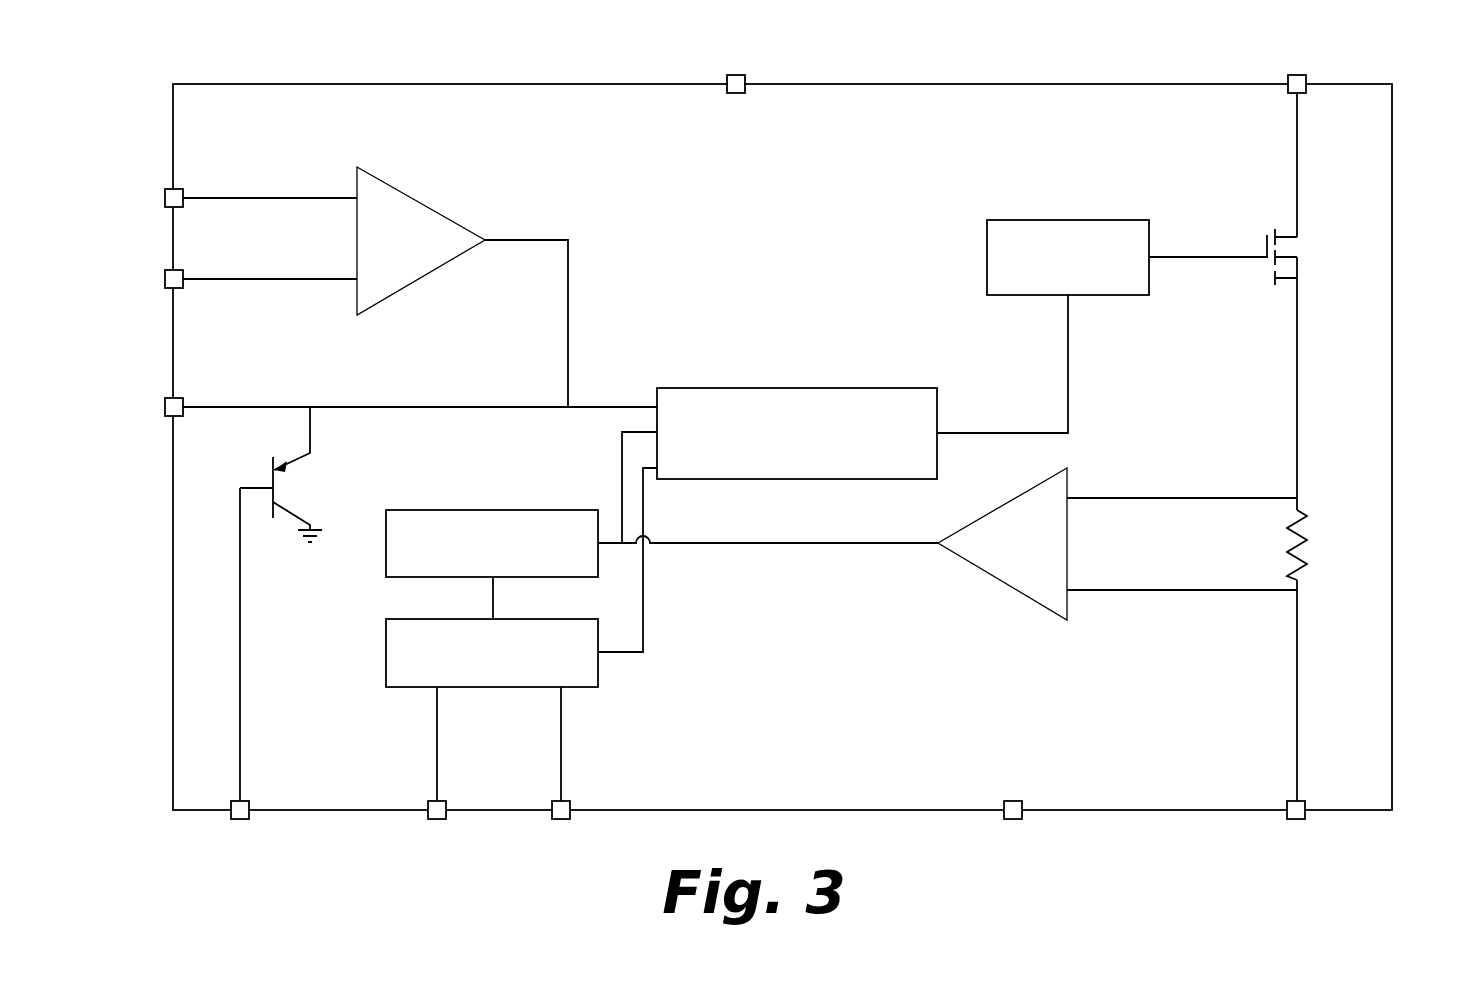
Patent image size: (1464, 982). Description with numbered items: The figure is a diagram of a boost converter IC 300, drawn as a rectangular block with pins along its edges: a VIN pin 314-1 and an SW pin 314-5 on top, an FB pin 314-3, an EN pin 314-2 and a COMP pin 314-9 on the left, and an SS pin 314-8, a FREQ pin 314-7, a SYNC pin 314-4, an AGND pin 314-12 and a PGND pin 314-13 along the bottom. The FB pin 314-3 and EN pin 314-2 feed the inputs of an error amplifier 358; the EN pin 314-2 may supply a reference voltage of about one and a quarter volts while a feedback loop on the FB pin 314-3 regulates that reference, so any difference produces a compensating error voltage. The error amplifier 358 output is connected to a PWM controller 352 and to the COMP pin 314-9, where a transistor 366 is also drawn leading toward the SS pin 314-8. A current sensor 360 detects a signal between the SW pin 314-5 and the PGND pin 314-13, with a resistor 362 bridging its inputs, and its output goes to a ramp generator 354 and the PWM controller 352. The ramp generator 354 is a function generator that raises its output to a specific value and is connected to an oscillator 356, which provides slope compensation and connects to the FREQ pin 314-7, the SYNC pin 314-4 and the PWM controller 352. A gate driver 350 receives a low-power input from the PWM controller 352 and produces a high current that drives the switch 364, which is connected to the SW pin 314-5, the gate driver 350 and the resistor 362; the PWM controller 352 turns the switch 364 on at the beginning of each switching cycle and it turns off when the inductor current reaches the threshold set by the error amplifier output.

The boost converter IC 300 is at (220, 50).
The VIN pin 314-1 is at (707, 69).
The EN pin 314-2 is at (85, 300).
The FB pin 314-3 is at (85, 223).
The SYNC pin 314-4 is at (532, 880).
The SW pin 314-5 is at (1268, 68).
The FREQ pin 314-7 is at (408, 880).
The SS pin 314-8 is at (211, 880).
The COMP pin 314-9 is at (84, 433).
The AGND pin 314-12 is at (978, 880).
The PGND pin 314-13 is at (1261, 880).
The gate driver 350 is at (1050, 285).
The PWM controller 352 is at (779, 473).
The ramp generator 354 is at (474, 570).
The oscillator 356 is at (474, 679).
The error amplifier 358 is at (410, 183).
The current sensor 360 is at (1042, 468).
The resistor R1 362 is at (1320, 546).
The switch S1 364 is at (1322, 248).
The transistor T1 366 is at (318, 478).